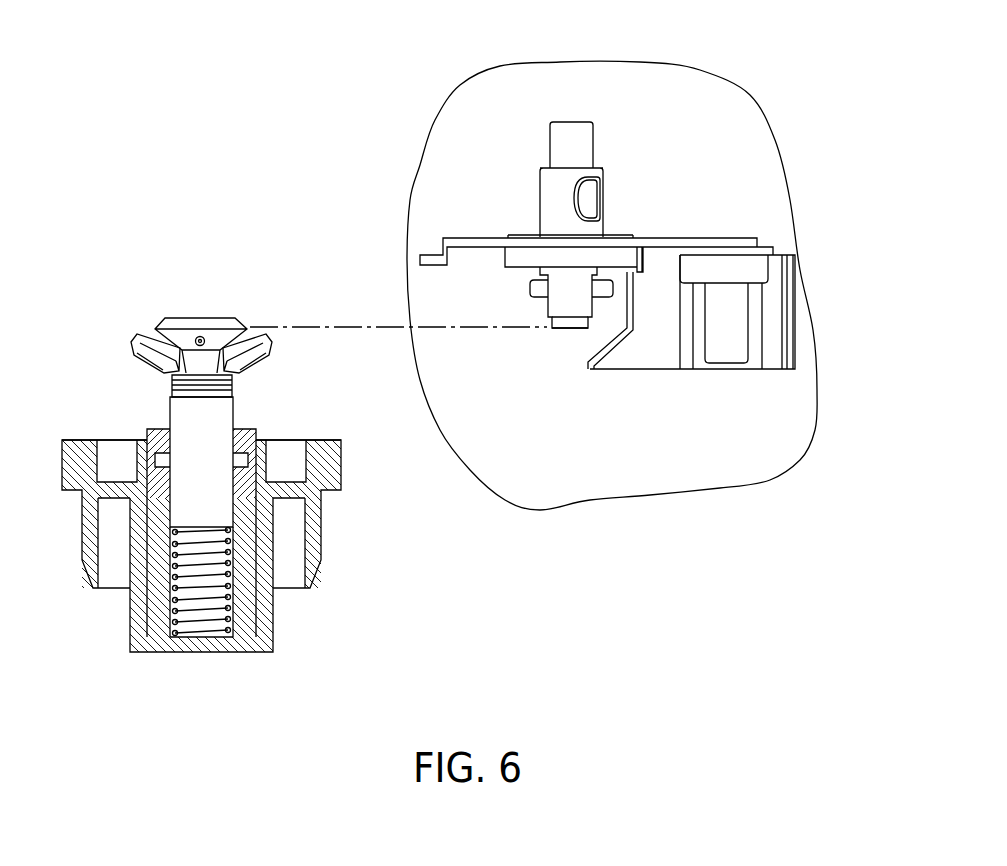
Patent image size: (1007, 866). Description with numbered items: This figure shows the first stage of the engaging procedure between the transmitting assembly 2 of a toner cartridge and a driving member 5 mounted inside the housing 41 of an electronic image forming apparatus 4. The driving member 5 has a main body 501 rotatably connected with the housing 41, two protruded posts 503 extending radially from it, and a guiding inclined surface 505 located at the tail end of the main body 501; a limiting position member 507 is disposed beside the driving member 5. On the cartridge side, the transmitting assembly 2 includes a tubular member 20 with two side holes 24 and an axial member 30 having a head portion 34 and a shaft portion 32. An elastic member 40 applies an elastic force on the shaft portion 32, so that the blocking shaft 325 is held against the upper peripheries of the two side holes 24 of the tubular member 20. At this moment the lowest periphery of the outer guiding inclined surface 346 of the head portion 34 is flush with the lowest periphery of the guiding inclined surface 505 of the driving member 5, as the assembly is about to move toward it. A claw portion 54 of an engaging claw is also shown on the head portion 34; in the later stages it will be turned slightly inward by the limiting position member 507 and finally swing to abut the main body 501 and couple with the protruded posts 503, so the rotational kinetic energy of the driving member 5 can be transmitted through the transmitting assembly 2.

The transmitting assembly 2 is at (83, 296).
The tubular member 20 is at (245, 612).
The side holes 24 is at (243, 483).
The blocking shaft 325 is at (163, 463).
The shaft portion 32 is at (185, 415).
The elastic member 40 is at (202, 610).
The axial member 30 is at (258, 306).
The outer guiding inclined surface 346 is at (198, 322).
The head portion 34 is at (178, 335).
The claw portion 54 is at (248, 357).
The electronic image forming apparatus 4 is at (722, 155).
The housing 41 is at (468, 246).
The driving member 5 is at (530, 152).
The main body 501 is at (562, 282).
The guiding inclined surface 505 is at (567, 328).
The protruded posts 503 is at (583, 287).
The limiting position member 507 is at (592, 362).